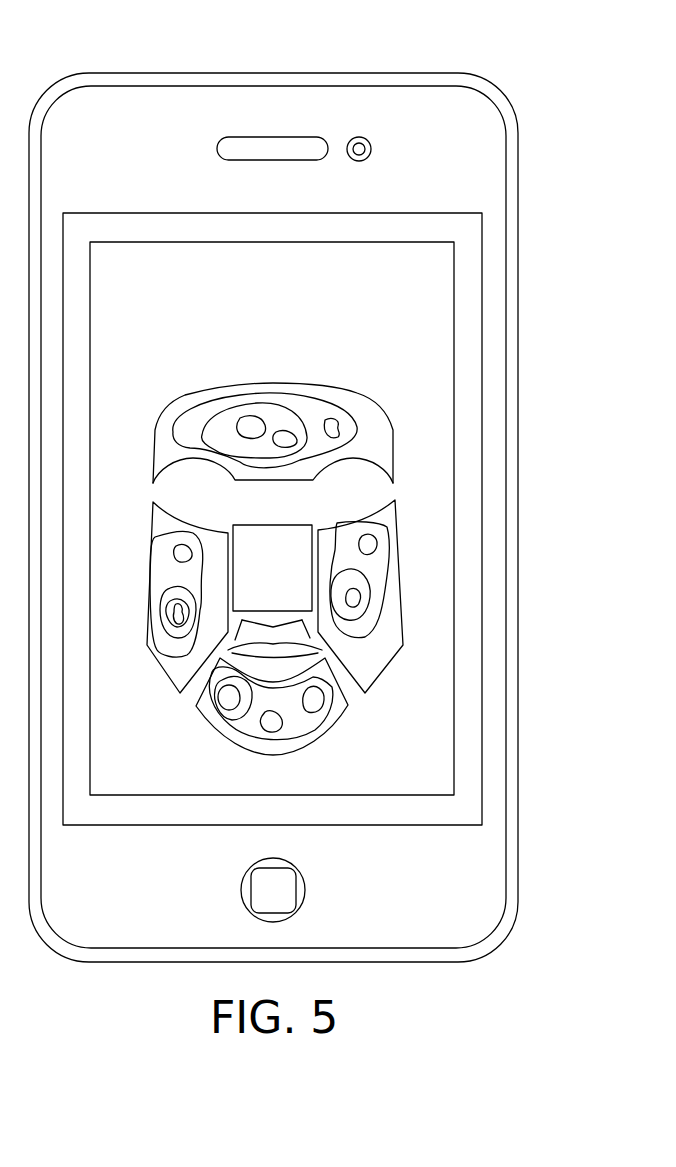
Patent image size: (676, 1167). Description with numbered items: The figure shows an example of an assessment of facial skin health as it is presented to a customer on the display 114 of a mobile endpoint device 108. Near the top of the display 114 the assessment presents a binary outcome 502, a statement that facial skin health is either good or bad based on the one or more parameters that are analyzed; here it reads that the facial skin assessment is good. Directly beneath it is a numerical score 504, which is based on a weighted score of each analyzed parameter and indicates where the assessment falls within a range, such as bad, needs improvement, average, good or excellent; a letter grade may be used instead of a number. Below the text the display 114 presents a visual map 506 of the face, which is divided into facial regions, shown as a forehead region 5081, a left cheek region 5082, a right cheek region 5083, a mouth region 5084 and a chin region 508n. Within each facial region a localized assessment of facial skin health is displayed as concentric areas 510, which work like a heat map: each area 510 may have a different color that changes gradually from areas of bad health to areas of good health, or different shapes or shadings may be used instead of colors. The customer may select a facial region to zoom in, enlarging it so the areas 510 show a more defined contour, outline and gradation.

The mobile endpoint device 108 is at (222, 73).
The display 114 is at (448, 264).
The binary outcome 502 is at (425, 289).
The numerical score 504 is at (213, 307).
The visual map 506 is at (270, 433).
The facial region 5081 is at (403, 403).
The facial region 5082 is at (164, 587).
The facial region 5083 is at (372, 524).
The facial region 5084 is at (303, 642).
The facial region 508n is at (340, 703).
The concentric areas 510 is at (170, 622).